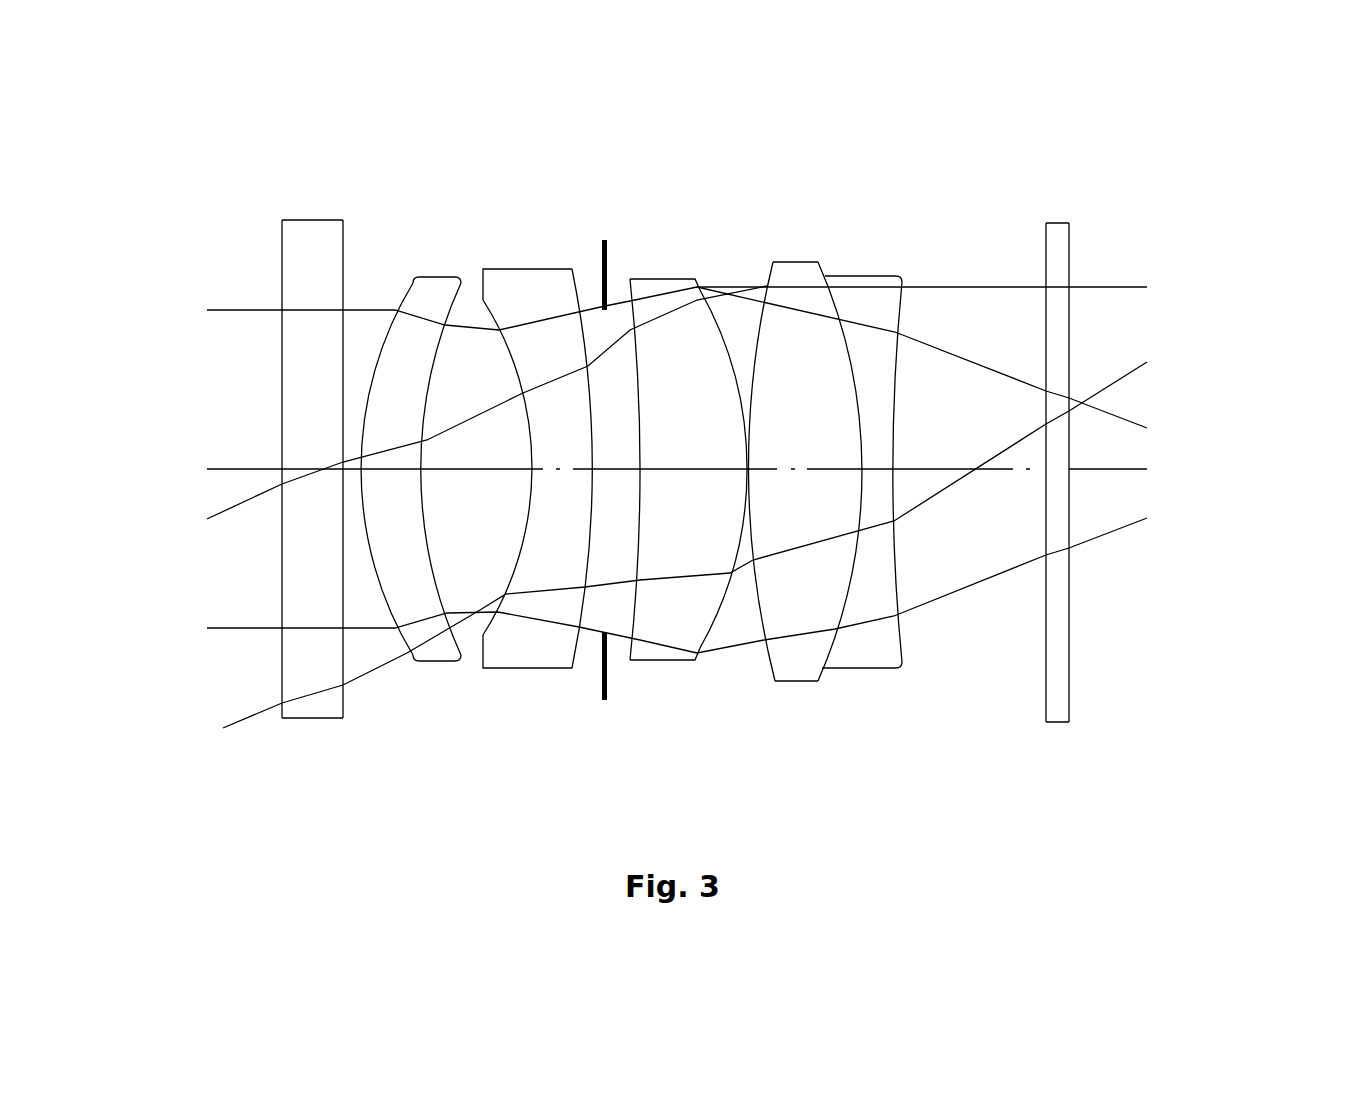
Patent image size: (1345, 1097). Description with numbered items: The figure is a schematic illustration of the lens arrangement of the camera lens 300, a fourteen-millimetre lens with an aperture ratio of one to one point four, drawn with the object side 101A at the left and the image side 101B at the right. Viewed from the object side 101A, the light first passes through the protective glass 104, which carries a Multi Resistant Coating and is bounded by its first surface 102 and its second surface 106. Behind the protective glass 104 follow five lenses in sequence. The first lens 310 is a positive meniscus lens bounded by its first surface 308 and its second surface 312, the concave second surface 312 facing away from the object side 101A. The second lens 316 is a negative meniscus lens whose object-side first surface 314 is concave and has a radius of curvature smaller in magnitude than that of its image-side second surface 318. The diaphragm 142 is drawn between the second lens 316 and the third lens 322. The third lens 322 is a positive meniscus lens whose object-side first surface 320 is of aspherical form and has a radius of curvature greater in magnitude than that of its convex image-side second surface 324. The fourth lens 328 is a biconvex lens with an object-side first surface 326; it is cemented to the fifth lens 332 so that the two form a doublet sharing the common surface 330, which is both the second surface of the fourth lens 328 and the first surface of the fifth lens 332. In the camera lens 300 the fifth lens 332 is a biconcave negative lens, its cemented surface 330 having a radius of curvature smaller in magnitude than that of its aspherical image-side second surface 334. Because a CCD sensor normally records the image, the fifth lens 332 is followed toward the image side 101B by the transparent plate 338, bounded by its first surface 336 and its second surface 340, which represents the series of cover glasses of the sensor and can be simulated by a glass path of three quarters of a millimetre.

The camera lens 300 is at (1162, 70).
The first surface of the protective glass 102 is at (282, 292).
The protective glass 104 is at (355, 390).
The second surface of the protective glass 106 is at (345, 277).
The first surface of the lens 310 308 is at (386, 603).
The first lens of the camera lens 310 is at (412, 469).
The second surface of the lens 310 312 is at (430, 567).
The first surface of the lens 316 314 is at (525, 535).
The second lens of the camera lens 316 is at (587, 503).
The second surface of the lens 316 318 is at (582, 640).
The diaphragm 142 is at (607, 272).
The first surface of the lens 322 320 is at (638, 555).
The third lens of the camera lens 322 is at (757, 493).
The second surface of the lens 322 324 is at (720, 600).
The first surface of the lens 328 326 is at (762, 595).
The fourth lens of the camera lens 328 is at (934, 476).
The second surface of the lens 328 / first surface of the lens 332 330 is at (852, 568).
The fifth lens of the camera lens 332 is at (959, 470).
The second surface of the lens 332 334 is at (893, 547).
The first surface of the transparent plate 338 336 is at (1050, 638).
The transparent plate 338 is at (1154, 418).
The second surface of the transparent plate 338 340 is at (1072, 345).
The object side of the camera lens 101A is at (163, 875).
The image side of the camera lens 101B is at (1252, 858).